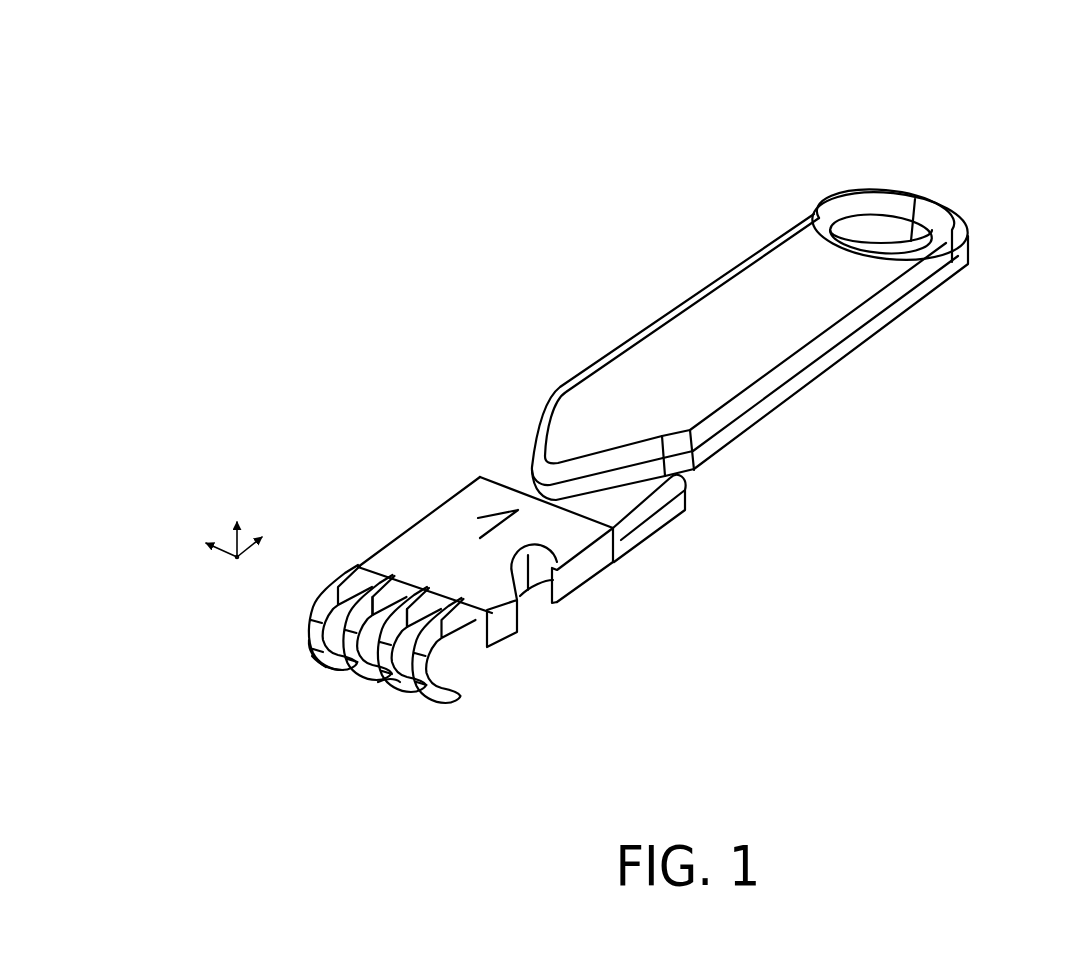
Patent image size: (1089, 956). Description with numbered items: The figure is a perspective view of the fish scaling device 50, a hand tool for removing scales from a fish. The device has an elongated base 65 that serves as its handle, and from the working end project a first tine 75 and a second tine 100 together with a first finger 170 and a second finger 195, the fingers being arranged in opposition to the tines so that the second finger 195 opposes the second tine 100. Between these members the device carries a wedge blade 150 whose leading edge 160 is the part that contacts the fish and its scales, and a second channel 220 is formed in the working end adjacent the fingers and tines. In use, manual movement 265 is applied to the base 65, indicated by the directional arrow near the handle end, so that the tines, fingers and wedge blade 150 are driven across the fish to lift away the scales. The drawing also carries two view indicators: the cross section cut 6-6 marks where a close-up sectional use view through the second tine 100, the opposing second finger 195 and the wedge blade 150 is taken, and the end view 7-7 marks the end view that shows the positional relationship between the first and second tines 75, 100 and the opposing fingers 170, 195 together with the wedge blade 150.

The fish scaling device 50 is at (1002, 85).
The base 65 is at (777, 408).
The first tine 75 is at (378, 680).
The second tine 100 is at (460, 682).
The wedge blade 150 is at (307, 640).
The leading edge 160 is at (310, 655).
The first finger 170 is at (393, 593).
The second finger 195 is at (405, 602).
The second channel 220 is at (380, 668).
The manual movement 265 is at (968, 175).
The cross section cut 6- 6 is at (478, 518).
The end view 7- 7 is at (60, 555).